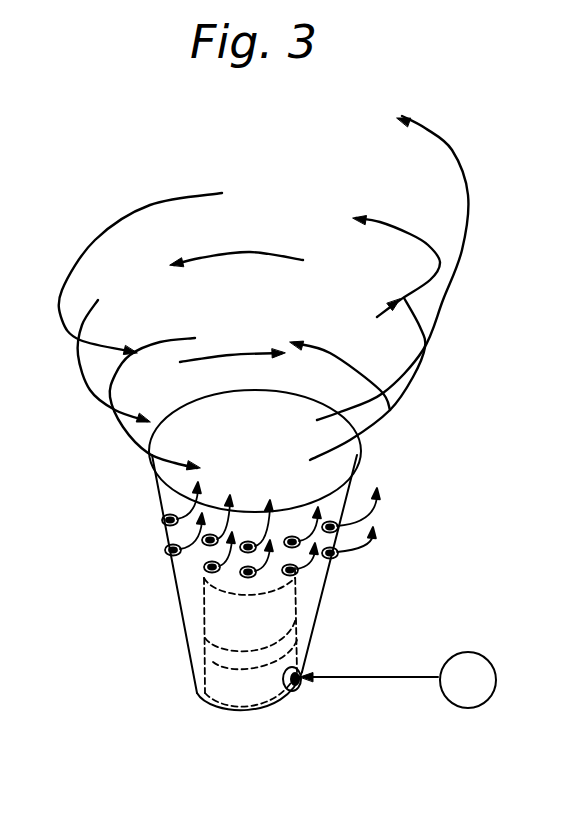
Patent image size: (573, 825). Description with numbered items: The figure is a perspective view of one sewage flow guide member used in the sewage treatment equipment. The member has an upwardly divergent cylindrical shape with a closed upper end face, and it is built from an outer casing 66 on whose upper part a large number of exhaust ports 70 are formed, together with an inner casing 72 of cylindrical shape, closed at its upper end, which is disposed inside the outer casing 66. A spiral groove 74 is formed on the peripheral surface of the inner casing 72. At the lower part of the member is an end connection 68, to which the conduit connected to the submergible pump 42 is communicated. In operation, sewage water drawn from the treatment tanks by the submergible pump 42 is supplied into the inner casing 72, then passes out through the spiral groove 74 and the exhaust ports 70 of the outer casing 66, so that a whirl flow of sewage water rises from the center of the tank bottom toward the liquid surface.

The submergible pump 42 is at (460, 708).
The outer casing 66 is at (313, 580).
The end connection 68 is at (300, 693).
The exhaust ports 70 is at (172, 578).
The inner casing 72 is at (300, 612).
The spiral groove 74 is at (213, 658).